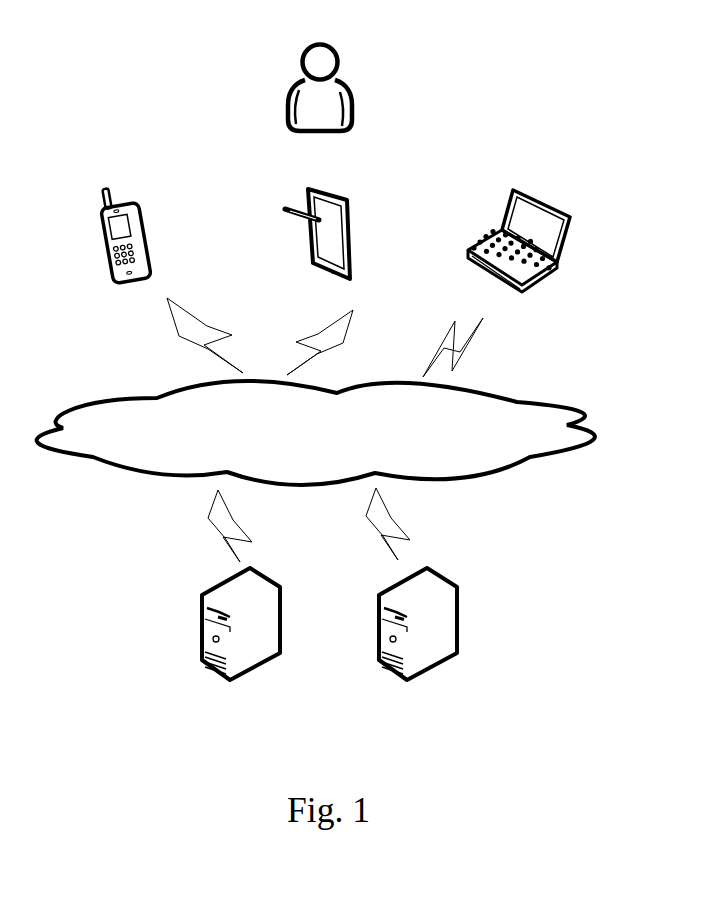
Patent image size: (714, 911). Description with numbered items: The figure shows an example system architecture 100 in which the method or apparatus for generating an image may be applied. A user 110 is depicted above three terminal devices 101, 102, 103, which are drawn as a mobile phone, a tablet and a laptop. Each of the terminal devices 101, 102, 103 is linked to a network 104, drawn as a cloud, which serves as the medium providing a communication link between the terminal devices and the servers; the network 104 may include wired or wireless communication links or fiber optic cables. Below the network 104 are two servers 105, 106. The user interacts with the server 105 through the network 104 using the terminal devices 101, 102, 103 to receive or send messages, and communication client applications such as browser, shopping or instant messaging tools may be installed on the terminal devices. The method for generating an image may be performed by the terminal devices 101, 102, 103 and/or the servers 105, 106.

The system architecture 100 is at (566, 36).
The user 110 is at (320, 107).
The terminal device 101 is at (124, 252).
The terminal device 102 is at (317, 252).
The terminal device 103 is at (519, 257).
The network 104 is at (316, 433).
The server 105 is at (241, 641).
The server 106 is at (418, 641).